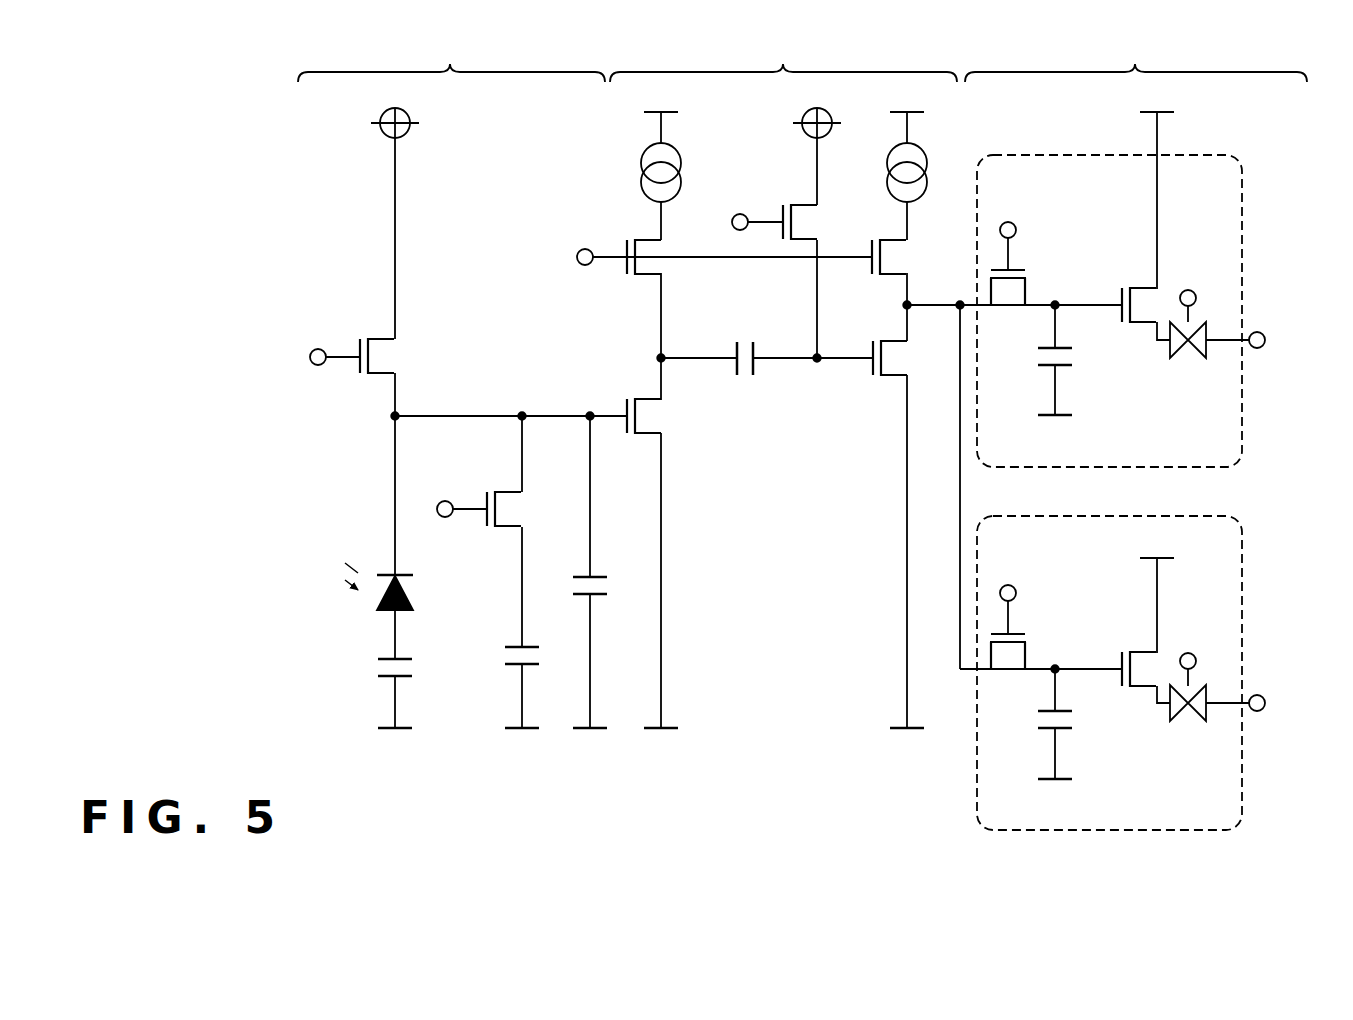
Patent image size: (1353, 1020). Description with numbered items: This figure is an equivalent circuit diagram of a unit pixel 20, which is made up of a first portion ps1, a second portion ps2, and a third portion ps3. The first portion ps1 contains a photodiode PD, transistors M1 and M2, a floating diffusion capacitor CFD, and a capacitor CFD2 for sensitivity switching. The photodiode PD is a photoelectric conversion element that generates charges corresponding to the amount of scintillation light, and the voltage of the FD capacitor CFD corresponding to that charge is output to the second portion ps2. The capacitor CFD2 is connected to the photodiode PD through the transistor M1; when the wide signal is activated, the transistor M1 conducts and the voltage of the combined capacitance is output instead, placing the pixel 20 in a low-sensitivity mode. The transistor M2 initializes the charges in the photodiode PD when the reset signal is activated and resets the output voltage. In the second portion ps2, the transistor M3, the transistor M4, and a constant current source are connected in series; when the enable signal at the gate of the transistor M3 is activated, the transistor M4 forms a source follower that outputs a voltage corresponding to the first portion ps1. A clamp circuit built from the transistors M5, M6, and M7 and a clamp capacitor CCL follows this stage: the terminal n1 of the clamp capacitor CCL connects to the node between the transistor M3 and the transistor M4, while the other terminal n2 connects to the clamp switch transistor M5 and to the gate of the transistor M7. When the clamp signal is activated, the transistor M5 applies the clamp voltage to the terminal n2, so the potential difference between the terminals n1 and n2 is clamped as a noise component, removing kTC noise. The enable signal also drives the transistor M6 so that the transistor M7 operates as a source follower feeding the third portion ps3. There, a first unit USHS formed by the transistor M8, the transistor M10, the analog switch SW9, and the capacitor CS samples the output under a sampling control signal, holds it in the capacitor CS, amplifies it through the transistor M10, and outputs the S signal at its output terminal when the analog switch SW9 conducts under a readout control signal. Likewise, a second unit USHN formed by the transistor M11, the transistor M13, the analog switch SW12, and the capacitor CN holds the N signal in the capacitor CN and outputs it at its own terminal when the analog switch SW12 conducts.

The unit pixel 20 is at (176, 168).
The first portion ps1 is at (451, 60).
The second portion ps2 is at (783, 60).
The third portion ps3 is at (1136, 60).
The transistor M1 is at (493, 531).
The transistor M2 is at (369, 356).
The transistor M3 is at (724, 265).
The transistor M4 is at (662, 500).
The transistor M5 is at (788, 222).
The transistor M6 is at (905, 290).
The transistor M7 is at (906, 534).
The transistor M8 is at (1008, 279).
The transistor M10 is at (1136, 226).
The transistor M11 is at (1014, 642).
The transistor M13 is at (1136, 630).
The analog switch SW9 is at (1214, 340).
The analog switch SW12 is at (1214, 704).
The photodiode PD is at (394, 645).
The floating diffusion capacitor CFD is at (575, 572).
The capacitor for sensitivity switching CFD2 is at (504, 671).
The clamp capacitor CCL is at (743, 374).
The capacitor CS is at (1072, 360).
The capacitor CN is at (1073, 724).
The terminal n1 is at (706, 350).
The terminal n2 is at (784, 350).
The first unit USHS is at (1024, 155).
The second unit USHN is at (1242, 792).